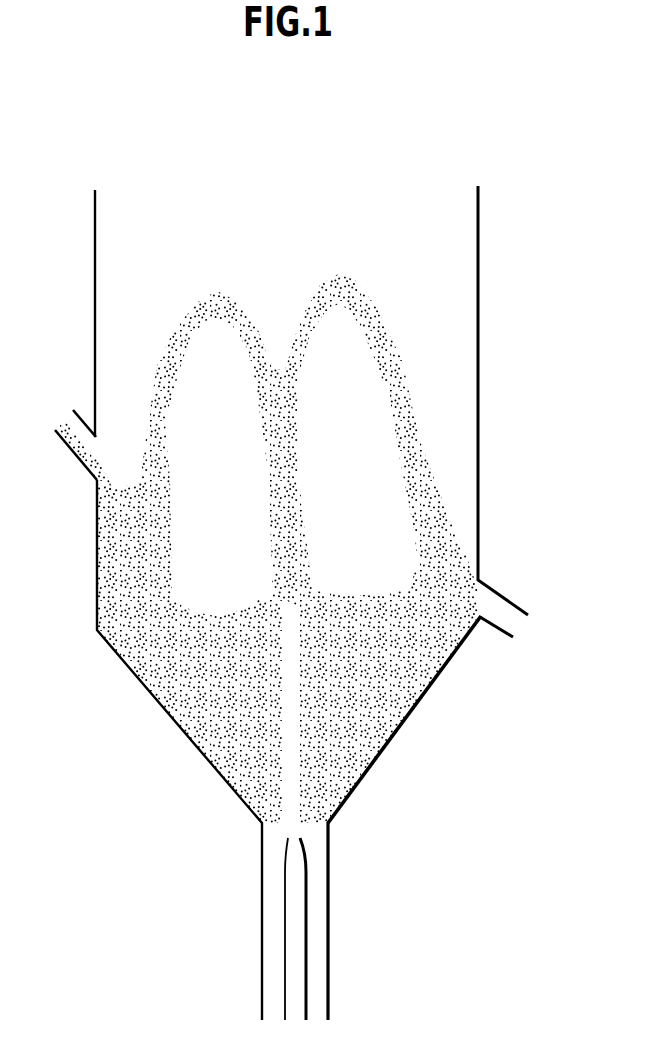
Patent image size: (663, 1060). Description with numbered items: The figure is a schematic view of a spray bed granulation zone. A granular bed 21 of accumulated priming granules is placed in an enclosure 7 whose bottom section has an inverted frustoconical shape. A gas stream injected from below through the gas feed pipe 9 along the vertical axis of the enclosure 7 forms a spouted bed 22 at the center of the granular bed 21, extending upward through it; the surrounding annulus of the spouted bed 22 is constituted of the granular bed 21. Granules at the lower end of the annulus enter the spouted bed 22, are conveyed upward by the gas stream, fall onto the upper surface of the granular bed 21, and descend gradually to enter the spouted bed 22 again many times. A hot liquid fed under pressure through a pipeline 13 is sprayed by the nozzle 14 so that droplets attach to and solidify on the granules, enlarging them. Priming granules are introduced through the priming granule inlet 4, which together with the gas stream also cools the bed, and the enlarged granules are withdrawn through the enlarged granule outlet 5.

The priming granule inlet 4 is at (75, 458).
The enlarged granule outlet 5 is at (512, 598).
The enclosure 7 is at (197, 750).
The gas feed pipe 9 is at (330, 933).
The pipeline 13 is at (293, 898).
The nozzle 14 is at (300, 841).
The granular bed 21 is at (358, 657).
The spouted bed 22 is at (298, 743).